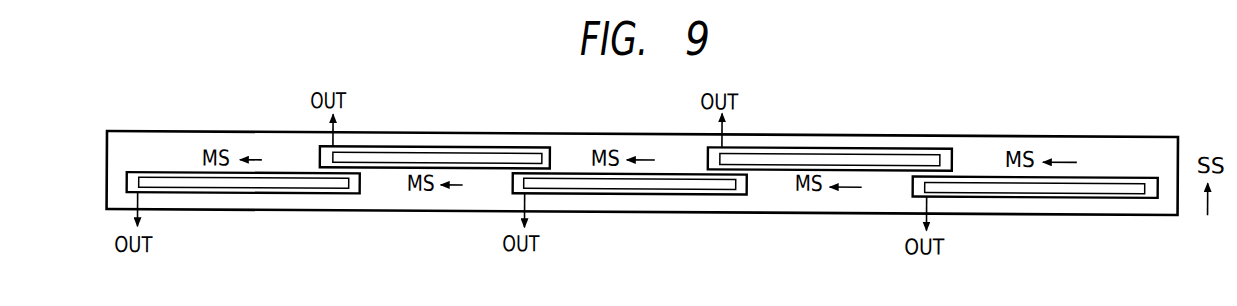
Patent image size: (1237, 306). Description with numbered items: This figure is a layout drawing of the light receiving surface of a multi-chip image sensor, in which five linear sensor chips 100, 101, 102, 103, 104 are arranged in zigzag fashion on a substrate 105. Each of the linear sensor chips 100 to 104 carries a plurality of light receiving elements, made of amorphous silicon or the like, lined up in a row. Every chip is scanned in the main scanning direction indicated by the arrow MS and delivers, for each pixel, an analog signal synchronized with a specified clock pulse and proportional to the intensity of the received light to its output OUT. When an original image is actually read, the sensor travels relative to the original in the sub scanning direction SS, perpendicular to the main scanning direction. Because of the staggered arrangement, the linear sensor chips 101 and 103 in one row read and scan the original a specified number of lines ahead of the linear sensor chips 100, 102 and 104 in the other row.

The linear sensor chip 100 is at (195, 194).
The linear sensor chip 101 is at (530, 145).
The linear sensor chip 102 is at (577, 192).
The linear sensor chip 103 is at (753, 144).
The linear sensor chip 104 is at (990, 192).
The substrate 105 is at (1072, 131).